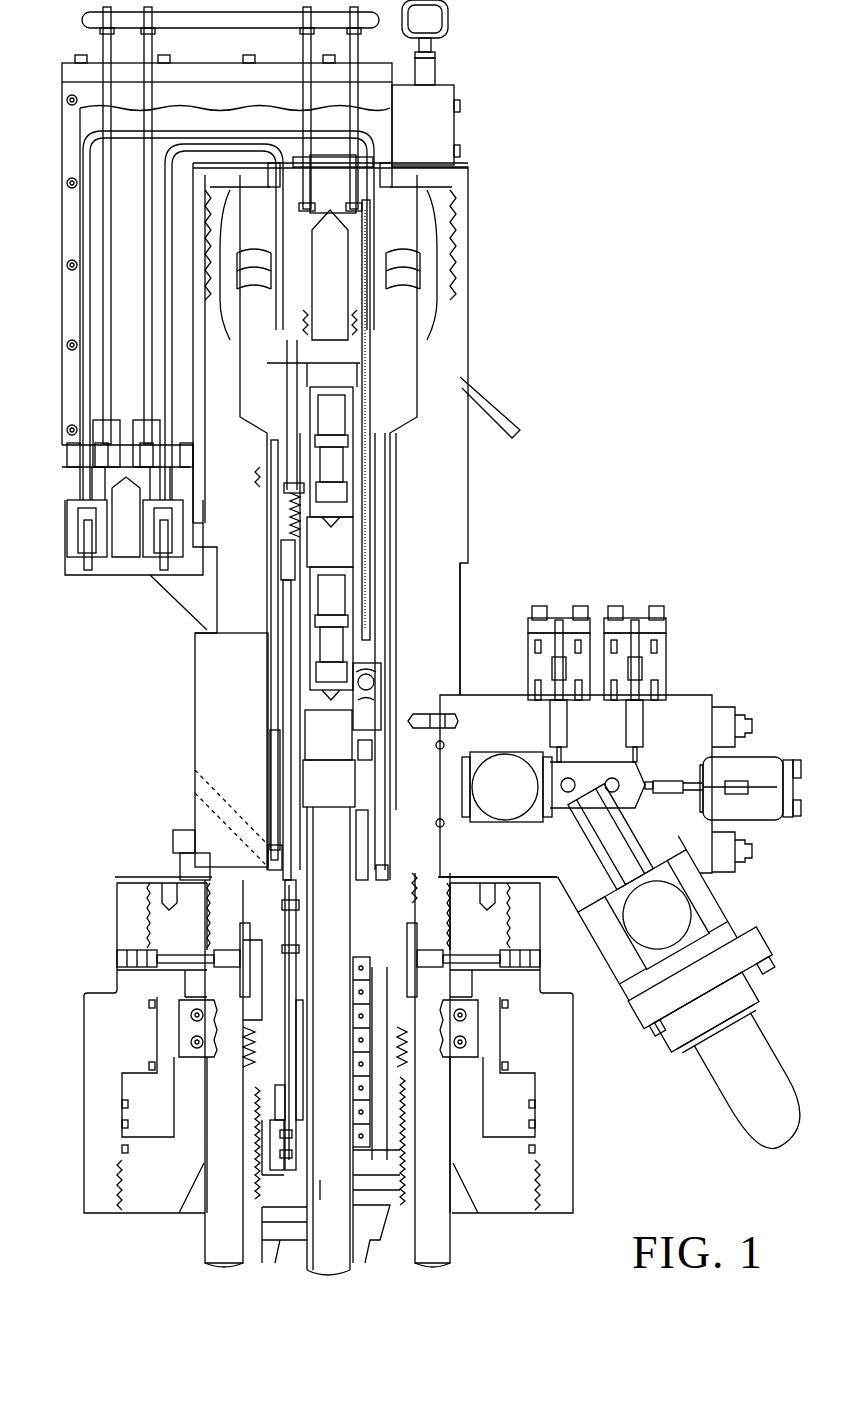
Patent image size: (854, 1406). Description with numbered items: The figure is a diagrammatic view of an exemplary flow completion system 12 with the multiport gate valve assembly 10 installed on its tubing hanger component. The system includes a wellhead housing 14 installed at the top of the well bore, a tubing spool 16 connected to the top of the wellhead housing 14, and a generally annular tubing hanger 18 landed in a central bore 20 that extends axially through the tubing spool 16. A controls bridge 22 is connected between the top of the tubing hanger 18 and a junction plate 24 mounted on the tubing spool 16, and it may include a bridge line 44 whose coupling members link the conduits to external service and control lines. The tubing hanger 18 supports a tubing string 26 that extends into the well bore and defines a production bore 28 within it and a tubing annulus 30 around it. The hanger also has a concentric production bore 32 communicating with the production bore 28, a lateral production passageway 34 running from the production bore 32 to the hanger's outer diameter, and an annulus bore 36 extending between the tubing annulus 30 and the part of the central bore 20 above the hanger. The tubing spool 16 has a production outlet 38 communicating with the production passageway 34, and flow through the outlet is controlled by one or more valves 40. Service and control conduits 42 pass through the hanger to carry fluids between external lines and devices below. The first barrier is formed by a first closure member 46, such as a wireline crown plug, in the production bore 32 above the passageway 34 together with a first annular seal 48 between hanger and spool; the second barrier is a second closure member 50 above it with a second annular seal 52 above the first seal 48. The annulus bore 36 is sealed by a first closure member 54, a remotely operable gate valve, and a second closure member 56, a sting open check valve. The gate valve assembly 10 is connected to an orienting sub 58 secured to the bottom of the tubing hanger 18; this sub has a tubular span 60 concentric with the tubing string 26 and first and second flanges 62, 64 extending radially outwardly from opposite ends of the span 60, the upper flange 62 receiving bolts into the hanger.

The multiport gate valve assembly 10 is at (365, 1055).
The flow completion system 12 is at (563, 565).
The wellhead housing 14 is at (450, 1245).
The tubing spool 16 is at (192, 701).
The tubing hanger 18 is at (400, 509).
The central bore 20 is at (388, 538).
The controls bridge 22 is at (503, 148).
The junction plate 24 is at (115, 577).
The tubing string 26 is at (355, 1182).
The production bore 28 is at (342, 1073).
The tubing annulus 30 is at (296, 1196).
The production bore 32 is at (344, 859).
The lateral production passageway 34 is at (358, 820).
The annulus bore 36 is at (285, 555).
The production outlet 38 is at (434, 798).
The valve 40 is at (492, 757).
The service and control conduit 42 is at (287, 694).
The bridge line 44 is at (82, 320).
The first closure member 46 is at (345, 592).
The first annular seal 48 is at (270, 733).
The second closure member 50 is at (345, 425).
The second annular seal 52 is at (270, 639).
The first closure member 54 is at (378, 685).
The second closure member 56 is at (292, 497).
The orienting sub 58 is at (292, 1037).
The tubular span 60 is at (293, 1075).
The first flange 62 is at (295, 938).
The second flange 64 is at (278, 1150).